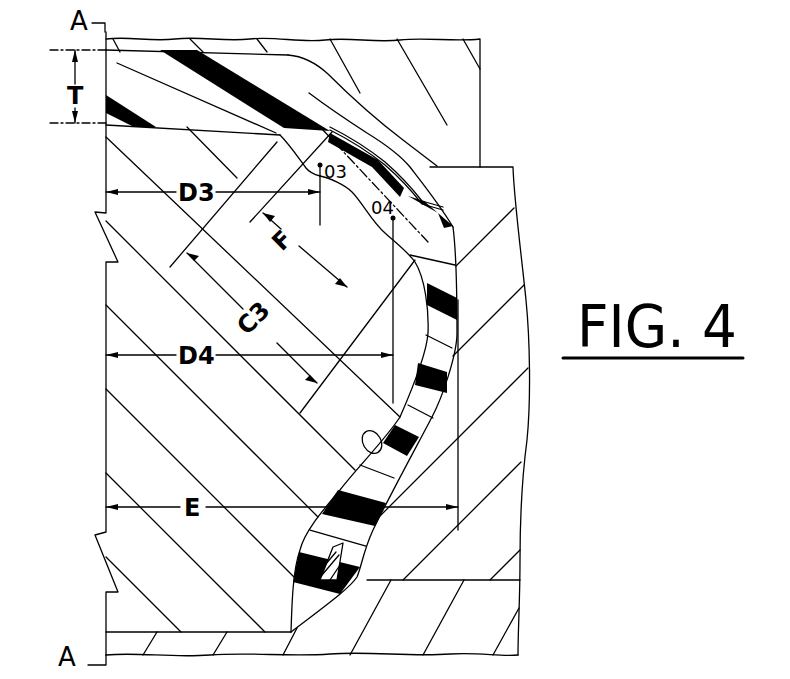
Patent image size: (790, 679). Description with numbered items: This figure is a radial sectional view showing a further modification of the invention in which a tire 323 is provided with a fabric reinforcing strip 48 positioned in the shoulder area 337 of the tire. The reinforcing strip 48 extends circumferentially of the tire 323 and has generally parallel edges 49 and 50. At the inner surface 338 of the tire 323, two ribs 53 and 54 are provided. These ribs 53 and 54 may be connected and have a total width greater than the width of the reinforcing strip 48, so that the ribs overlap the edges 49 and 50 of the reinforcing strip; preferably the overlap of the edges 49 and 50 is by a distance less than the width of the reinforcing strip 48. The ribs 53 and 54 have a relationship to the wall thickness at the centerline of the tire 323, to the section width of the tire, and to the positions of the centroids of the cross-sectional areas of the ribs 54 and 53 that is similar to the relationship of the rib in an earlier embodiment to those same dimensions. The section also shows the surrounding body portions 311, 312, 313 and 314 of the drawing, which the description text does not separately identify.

The upper body section 311 is at (482, 90).
The lower body section 312 is at (520, 613).
The right body section 313 is at (517, 222).
The main body section 314 is at (106, 338).
The fabric reinforcing strip 48 is at (390, 158).
The edge of reinforcing strip 49 is at (331, 127).
The edge of reinforcing strip 50 is at (447, 207).
The rib 53 is at (377, 235).
The rib 54 is at (283, 145).
The tire 323 is at (440, 357).
The shoulder area 337 is at (362, 108).
The inner surface 338 is at (380, 447).